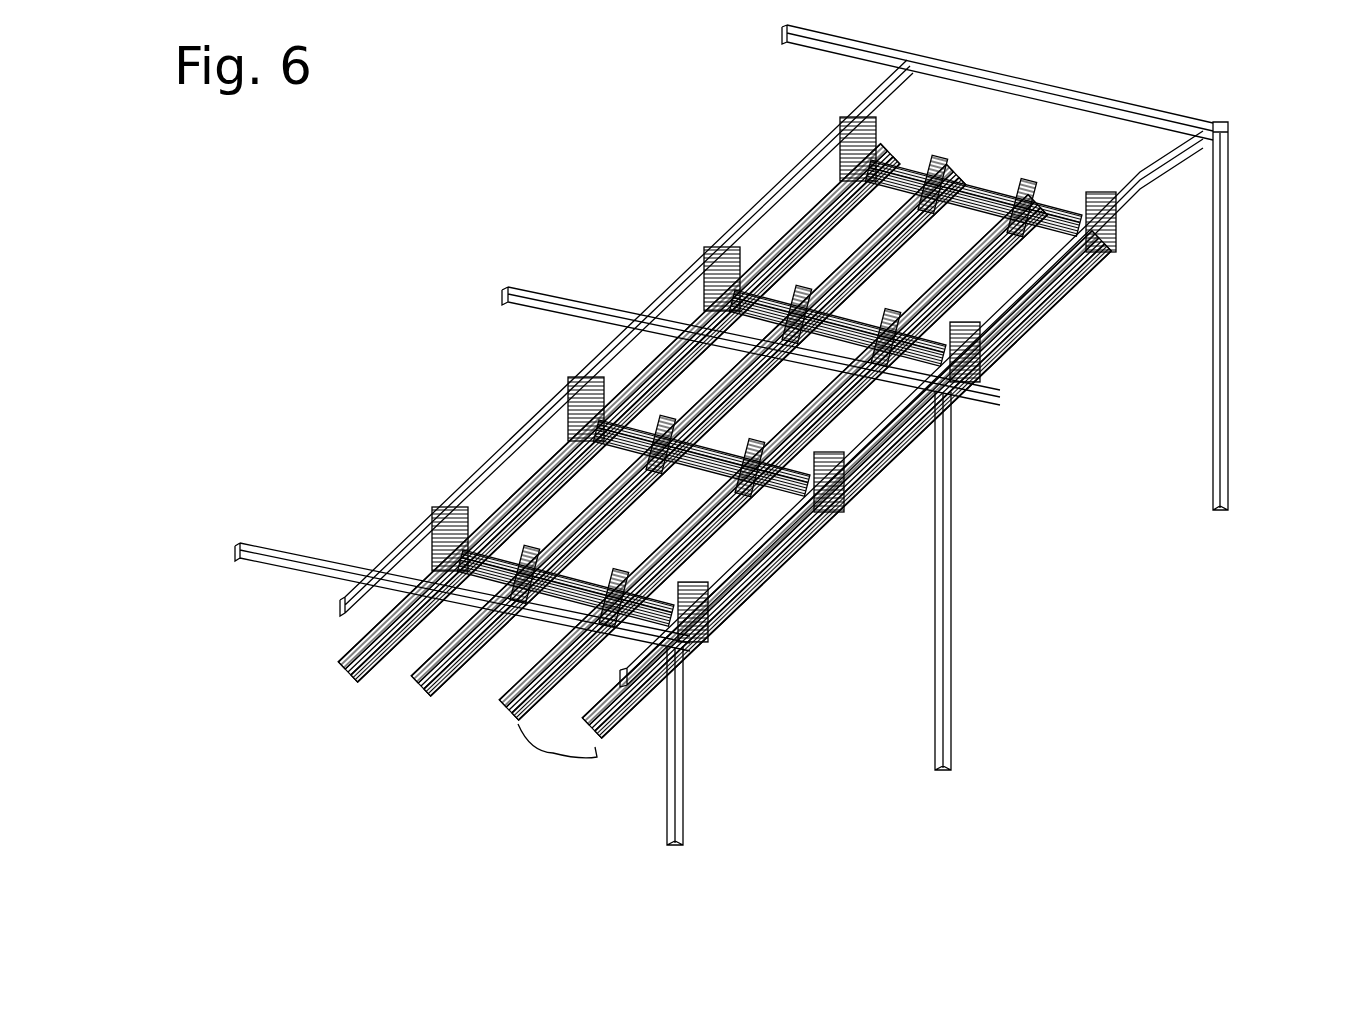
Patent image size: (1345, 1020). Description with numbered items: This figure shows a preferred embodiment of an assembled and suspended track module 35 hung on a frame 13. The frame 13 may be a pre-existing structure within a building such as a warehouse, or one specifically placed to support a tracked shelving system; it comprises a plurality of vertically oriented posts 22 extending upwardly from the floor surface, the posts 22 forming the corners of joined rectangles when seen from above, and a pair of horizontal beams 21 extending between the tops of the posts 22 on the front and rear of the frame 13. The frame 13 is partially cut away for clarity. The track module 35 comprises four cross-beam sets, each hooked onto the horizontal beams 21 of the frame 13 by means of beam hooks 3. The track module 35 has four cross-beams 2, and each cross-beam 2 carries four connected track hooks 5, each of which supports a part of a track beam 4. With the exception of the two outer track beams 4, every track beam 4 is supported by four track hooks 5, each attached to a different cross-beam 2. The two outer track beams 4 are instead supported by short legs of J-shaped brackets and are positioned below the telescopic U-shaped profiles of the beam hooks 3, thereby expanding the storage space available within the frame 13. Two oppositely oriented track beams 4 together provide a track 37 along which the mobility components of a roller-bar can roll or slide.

The cross-beam 2 is at (953, 240).
The beam hook 3 is at (806, 114).
The track beam 4 is at (415, 688).
The track hook 5 is at (1030, 225).
The frame 13 is at (1253, 378).
The horizontal beam 21 is at (1183, 128).
The post 22 is at (948, 675).
The track module 35 is at (987, 430).
The track 37 is at (557, 756).